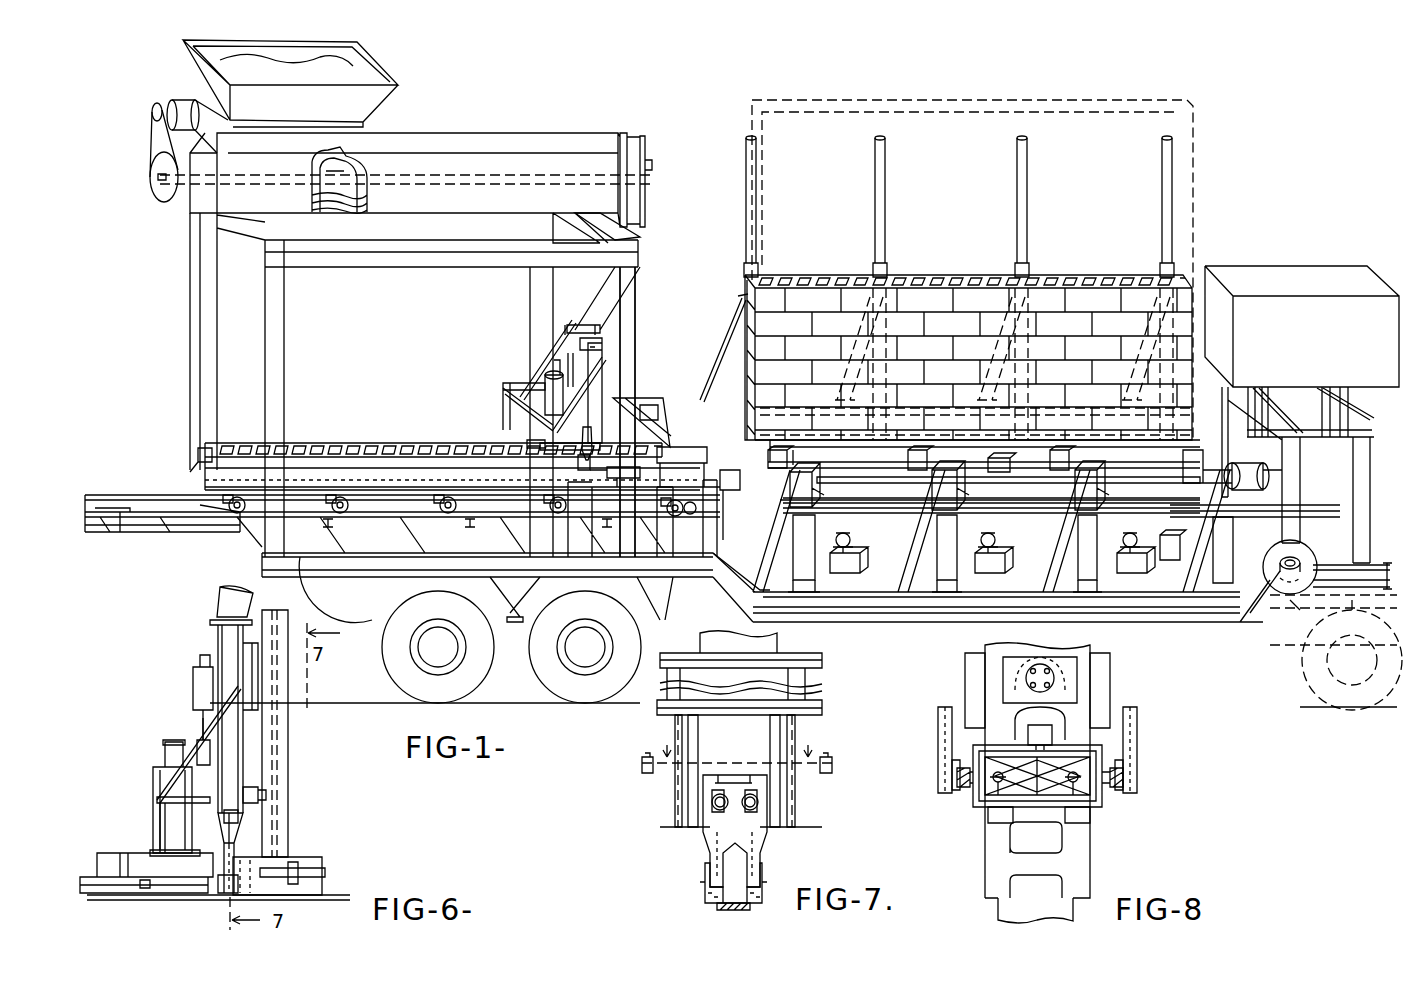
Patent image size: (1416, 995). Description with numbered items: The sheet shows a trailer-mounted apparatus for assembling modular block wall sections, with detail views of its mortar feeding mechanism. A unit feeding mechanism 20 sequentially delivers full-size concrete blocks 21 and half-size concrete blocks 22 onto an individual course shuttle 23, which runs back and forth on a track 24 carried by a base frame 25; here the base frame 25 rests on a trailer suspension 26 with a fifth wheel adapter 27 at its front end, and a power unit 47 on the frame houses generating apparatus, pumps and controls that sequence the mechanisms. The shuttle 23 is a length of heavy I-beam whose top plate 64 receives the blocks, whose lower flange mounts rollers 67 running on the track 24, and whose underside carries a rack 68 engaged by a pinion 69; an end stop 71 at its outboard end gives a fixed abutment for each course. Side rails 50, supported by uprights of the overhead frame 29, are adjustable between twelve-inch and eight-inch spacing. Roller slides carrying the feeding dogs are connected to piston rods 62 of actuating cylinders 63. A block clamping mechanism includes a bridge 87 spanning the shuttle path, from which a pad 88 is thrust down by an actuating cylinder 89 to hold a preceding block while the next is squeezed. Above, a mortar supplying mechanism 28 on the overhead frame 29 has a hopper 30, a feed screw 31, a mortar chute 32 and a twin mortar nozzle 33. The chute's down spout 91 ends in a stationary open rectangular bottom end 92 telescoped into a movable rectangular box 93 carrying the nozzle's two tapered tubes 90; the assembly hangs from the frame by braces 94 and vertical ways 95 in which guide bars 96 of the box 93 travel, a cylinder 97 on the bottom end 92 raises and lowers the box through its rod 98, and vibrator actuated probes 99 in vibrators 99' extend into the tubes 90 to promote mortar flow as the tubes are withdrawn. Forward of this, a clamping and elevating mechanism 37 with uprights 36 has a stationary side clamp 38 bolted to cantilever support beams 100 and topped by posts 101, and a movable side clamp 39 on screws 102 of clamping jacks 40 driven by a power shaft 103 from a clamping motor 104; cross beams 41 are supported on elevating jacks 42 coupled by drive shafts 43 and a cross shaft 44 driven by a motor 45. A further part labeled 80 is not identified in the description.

In FIG. 1, the unit feeding mechanism 20 is at (637, 397).
In FIG. 1, the full-size concrete blocks 21 is at (427, 443).
In FIG. 6, the full-size concrete blocks 21 is at (293, 858).
In FIG. 8, the full-size concrete blocks 21 is at (1090, 738).
In FIG. 1, the half-size concrete blocks 22 is at (673, 458).
In FIG. 1, the individual course shuttle 23 is at (203, 483).
In FIG. 6, the individual course shuttle 23 is at (330, 897).
In FIG. 7, the individual course shuttle 23 is at (711, 915).
In FIG. 8, the individual course shuttle 23 is at (991, 917).
In FIG. 1, the shuttle track 24 is at (128, 490).
In FIG. 1, the base frame 25 is at (717, 600).
In FIG. 1, the trailer suspension 26 is at (672, 624).
In FIG. 1, the fifth wheel adapter 27 is at (1339, 557).
In FIG. 1, the mortar supplying mechanism 28 is at (655, 197).
In FIG. 1, the overhead frame 29 is at (493, 392).
In FIG. 6, the overhead frame 29 is at (137, 734).
In FIG. 1, the hopper 30 is at (372, 96).
In FIG. 1, the feed screw 31 is at (312, 158).
In FIG. 1, the mortar chute 32 is at (632, 240).
In FIG. 1, the twin mortar nozzle 33 is at (578, 459).
In FIG. 1, the uprights 36 is at (798, 563).
In FIG. 1, the clamping and elevating mechanism 37 is at (1206, 431).
In FIG. 1, the stationary side clamp 38 is at (715, 395).
In FIG. 1, the movable side clamp 39 is at (790, 462).
In FIG. 1, the clamping jacks 40 is at (953, 492).
In FIG. 1, the cross beams 41 is at (853, 528).
In FIG. 1, the elevating jacks 42 is at (983, 545).
In FIG. 1, the drive shafts 43 is at (1000, 548).
In FIG. 1, the cross shaft 44 is at (1180, 533).
In FIG. 1, the motor 45 is at (1240, 544).
In FIG. 1, the power unit 47 is at (1365, 388).
In FIG. 1, the side rails 50 is at (353, 443).
In FIG. 6, the side rails 50 is at (150, 900).
In FIG. 7, the side rails 50 is at (767, 880).
In FIG. 8, the side rails 50 is at (967, 676).
In FIG. 1, the piston rods 62 is at (656, 410).
In FIG. 1, the actuating cylinders 63 is at (680, 430).
In FIG. 1, the top plate 64 is at (688, 510).
In FIG. 1, the rollers 67 is at (347, 500).
In FIG. 1, the rack 68 is at (726, 487).
In FIG. 1, the pinion 69 is at (748, 556).
In FIG. 1, the end stop 71 is at (203, 463).
In FIG. 1, the bolt 80 is at (612, 472).
In FIG. 6, the bolt 80 is at (310, 867).
In FIG. 1, the bridge 87 is at (525, 410).
In FIG. 6, the bridge 87 is at (144, 804).
In FIG. 1, the pad 88 is at (548, 443).
In FIG. 6, the pad 88 is at (160, 850).
In FIG. 8, the pad 88 is at (1073, 677).
In FIG. 1, the actuating cylinder 89 is at (510, 378).
In FIG. 6, the actuating cylinder 89 is at (167, 755).
In FIG. 6, the tapered tubes 90 is at (227, 847).
In FIG. 7, the tapered tubes 90 is at (743, 868).
In FIG. 8, the tapered tubes 90 is at (980, 807).
In FIG. 1, the down spout 91 is at (612, 305).
In FIG. 6, the down spout 91 is at (220, 598).
In FIG. 7, the down spout 91 is at (777, 645).
In FIG. 6, the open rectangular bottom end 92 is at (218, 633).
In FIG. 6, the rectangular box 93 is at (224, 827).
In FIG. 1, the braces 94 is at (568, 357).
In FIG. 6, the braces 94 is at (203, 718).
In FIG. 7, the braces 94 is at (677, 688).
In FIG. 8, the braces 94 is at (943, 727).
In FIG. 1, the vertical ways 95 is at (560, 340).
In FIG. 6, the vertical ways 95 is at (238, 753).
In FIG. 7, the vertical ways 95 is at (678, 735).
In FIG. 8, the vertical ways 95 is at (955, 762).
In FIG. 6, the guide bars 96 is at (255, 747).
In FIG. 8, the guide bars 96 is at (960, 773).
In FIG. 1, the cylinder 97 is at (545, 380).
In FIG. 6, the cylinder 97 is at (193, 672).
In FIG. 6, the rod 98 is at (200, 727).
In FIG. 8, the rod 98 is at (1044, 740).
In FIG. 1, the vibrator actuated probes 99 is at (609, 435).
In FIG. 6, the vibrator actuated probes 99 is at (281, 814).
In FIG. 7, the vibrator actuated probes 99 is at (737, 822).
In FIG. 8, the vibrator actuated probes 99 is at (1040, 774).
In FIG. 6, the vibrators 99' is at (293, 788).
In FIG. 7, the vibrators 99' is at (735, 813).
In FIG. 8, the vibrators 99' is at (1036, 832).
In FIG. 1, the cantilever support beams 100 is at (850, 422).
In FIG. 1, the posts 101 is at (746, 152).
In FIG. 1, the screws 102 is at (912, 460).
In FIG. 1, the power shaft 103 is at (990, 465).
In FIG. 1, the clamping motor 104 is at (1257, 468).